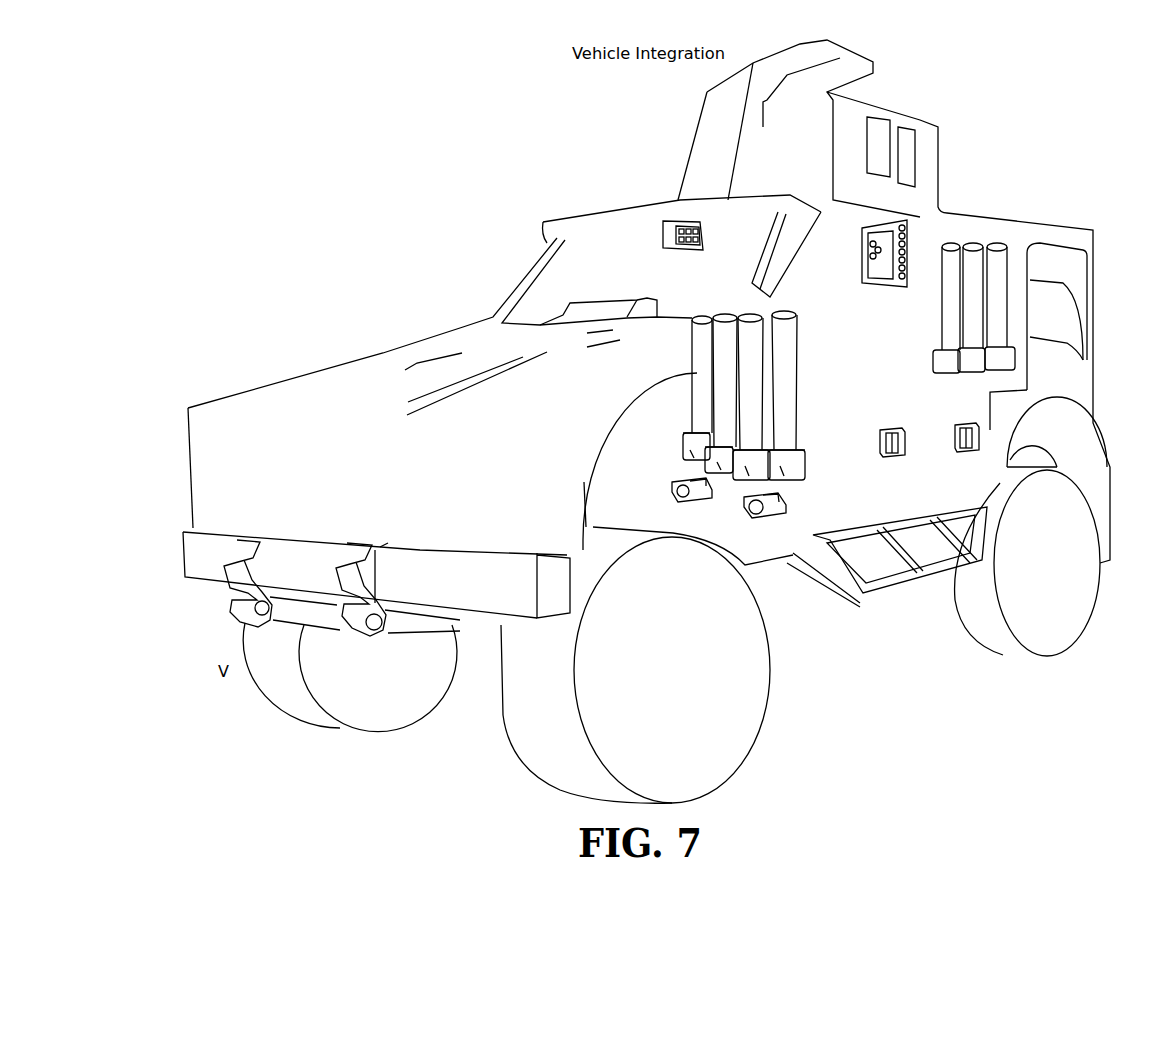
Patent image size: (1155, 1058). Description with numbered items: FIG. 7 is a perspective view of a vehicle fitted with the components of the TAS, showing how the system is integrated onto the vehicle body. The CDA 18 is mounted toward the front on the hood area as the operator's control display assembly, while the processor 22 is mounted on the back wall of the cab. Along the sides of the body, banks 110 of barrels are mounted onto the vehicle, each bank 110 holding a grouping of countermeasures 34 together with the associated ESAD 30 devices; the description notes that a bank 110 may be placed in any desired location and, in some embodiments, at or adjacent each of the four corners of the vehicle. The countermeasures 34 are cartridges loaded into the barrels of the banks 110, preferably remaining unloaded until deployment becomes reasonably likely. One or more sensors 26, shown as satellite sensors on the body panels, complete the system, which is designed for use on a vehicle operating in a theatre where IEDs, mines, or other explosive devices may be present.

The CDA 18 is at (646, 227).
The processor 22 is at (850, 258).
The bank 110 is at (590, 346).
The countermeasure 34 is at (668, 429).
The ESAD 30 is at (722, 513).
The sensor 26 is at (862, 466).